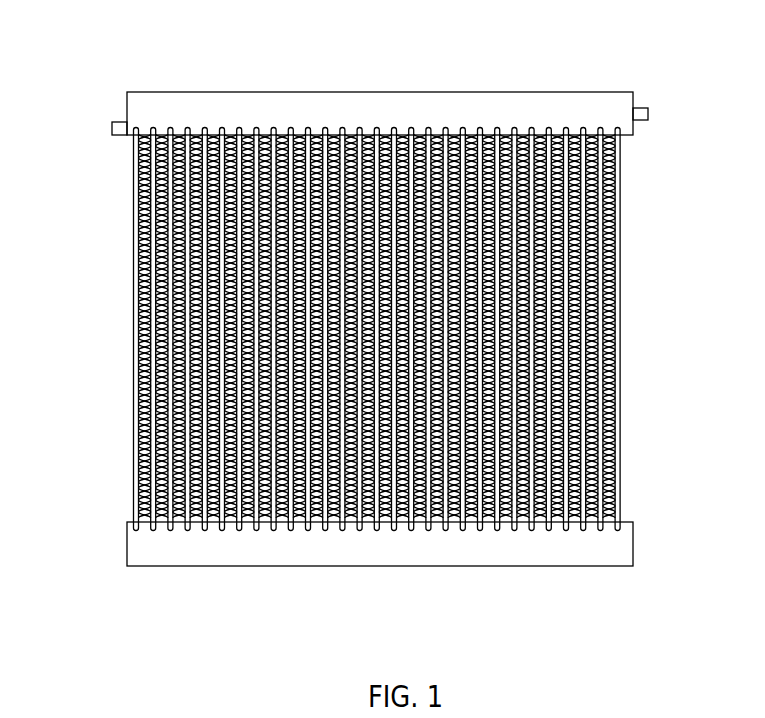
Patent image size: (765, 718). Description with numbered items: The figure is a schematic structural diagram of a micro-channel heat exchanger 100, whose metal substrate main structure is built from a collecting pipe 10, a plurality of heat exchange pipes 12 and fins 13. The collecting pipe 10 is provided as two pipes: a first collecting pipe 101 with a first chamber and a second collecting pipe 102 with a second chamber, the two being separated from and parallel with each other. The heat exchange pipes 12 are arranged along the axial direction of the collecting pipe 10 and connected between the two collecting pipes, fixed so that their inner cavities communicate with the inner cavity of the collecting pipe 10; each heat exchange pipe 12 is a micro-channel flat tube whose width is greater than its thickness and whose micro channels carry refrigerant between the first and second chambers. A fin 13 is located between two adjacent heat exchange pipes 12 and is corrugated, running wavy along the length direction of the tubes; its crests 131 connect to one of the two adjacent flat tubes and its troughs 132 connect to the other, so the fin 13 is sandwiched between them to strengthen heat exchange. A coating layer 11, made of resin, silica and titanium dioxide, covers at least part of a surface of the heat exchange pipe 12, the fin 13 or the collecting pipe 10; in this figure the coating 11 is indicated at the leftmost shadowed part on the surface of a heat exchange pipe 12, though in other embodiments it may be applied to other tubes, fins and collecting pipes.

The heat exchanger 100 is at (137, 43).
The collecting pipe 10 is at (413, 341).
The first collecting pipe 101 is at (420, 103).
The second collecting pipe 102 is at (328, 555).
The coating layer 11 is at (136, 168).
The heat exchange pipe 12 is at (620, 202).
The fin 13 is at (436, 378).
The crest 131 is at (578, 522).
The trough 132 is at (603, 415).